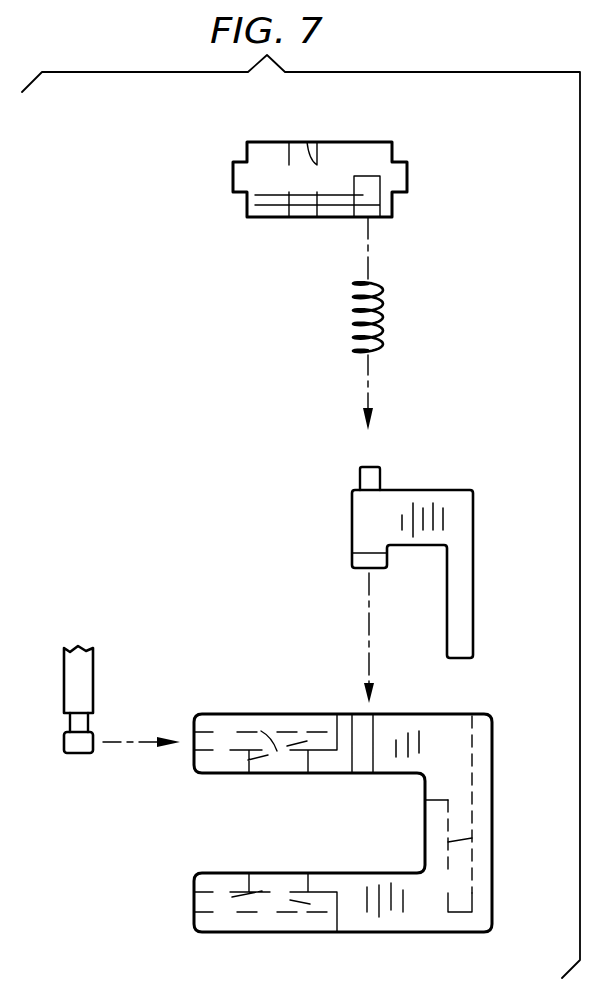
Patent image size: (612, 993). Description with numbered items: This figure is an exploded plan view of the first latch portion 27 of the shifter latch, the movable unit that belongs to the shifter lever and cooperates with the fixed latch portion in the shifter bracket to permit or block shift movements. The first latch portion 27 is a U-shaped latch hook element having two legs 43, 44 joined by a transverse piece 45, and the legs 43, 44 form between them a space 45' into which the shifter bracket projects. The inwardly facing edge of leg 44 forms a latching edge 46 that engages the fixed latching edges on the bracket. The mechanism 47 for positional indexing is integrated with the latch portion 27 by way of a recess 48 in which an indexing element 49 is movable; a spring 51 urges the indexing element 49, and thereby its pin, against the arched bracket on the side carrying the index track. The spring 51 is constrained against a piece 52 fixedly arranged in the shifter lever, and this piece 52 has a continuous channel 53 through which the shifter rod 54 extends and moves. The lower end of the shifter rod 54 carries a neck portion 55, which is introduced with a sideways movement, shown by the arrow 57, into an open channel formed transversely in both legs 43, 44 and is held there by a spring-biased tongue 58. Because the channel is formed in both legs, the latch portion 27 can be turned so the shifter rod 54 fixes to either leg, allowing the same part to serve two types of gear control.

The first latch portion 27 is at (341, 793).
The leg 43 is at (440, 737).
The leg 44 is at (200, 884).
The transverse piece 45 is at (500, 814).
The space 45' is at (267, 809).
The latching edge 46 is at (215, 873).
The mechanism for positional indexing 47 is at (455, 545).
The recess 48 is at (425, 825).
The indexing element 49 is at (400, 498).
The spring 51 is at (383, 315).
The piece 52 is at (368, 153).
The continuous channel 53 is at (307, 117).
The shifter rod 54 is at (115, 684).
The neck portion 55 is at (78, 722).
The arrow 57 is at (105, 743).
The spring-biased tongue 58 is at (249, 710).